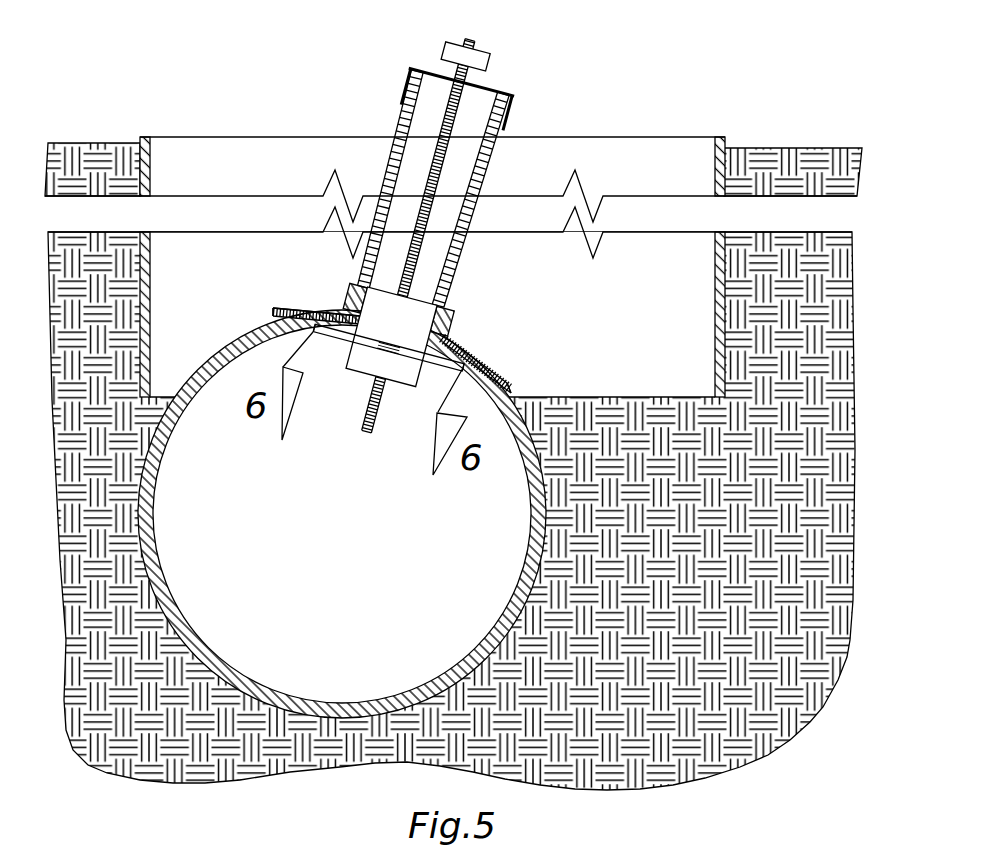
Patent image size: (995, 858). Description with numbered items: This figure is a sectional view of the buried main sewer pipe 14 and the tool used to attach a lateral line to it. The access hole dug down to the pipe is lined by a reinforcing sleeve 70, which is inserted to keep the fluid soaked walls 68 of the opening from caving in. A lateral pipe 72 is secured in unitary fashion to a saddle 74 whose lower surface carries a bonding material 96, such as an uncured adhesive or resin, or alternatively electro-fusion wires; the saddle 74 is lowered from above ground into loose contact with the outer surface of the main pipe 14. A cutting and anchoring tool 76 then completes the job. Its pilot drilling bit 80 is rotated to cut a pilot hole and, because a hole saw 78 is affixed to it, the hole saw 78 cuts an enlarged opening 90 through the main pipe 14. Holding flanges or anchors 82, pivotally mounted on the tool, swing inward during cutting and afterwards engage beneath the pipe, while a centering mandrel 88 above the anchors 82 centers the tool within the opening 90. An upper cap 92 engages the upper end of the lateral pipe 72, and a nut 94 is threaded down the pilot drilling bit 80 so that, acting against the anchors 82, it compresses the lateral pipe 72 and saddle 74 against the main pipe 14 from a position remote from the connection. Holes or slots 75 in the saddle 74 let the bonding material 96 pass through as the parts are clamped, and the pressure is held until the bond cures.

The main sewer pipe 14 is at (158, 562).
The fluid soaked walls 68 is at (140, 137).
The reinforcing sleeve 70 is at (152, 183).
The lateral pipe 72 is at (392, 153).
The saddle 74 is at (298, 316).
The holes or slots 75 is at (327, 303).
The cutting and anchoring tool 76 is at (415, 242).
The hole saw 78 is at (372, 368).
The pilot drilling bit 80 is at (368, 433).
The holding flanges or anchors 82 is at (318, 340).
The centering mandrel 88 is at (363, 281).
The opening 90 is at (363, 327).
The upper cap 92 is at (410, 74).
The nut 94 is at (487, 71).
The bonding material 96 is at (273, 314).